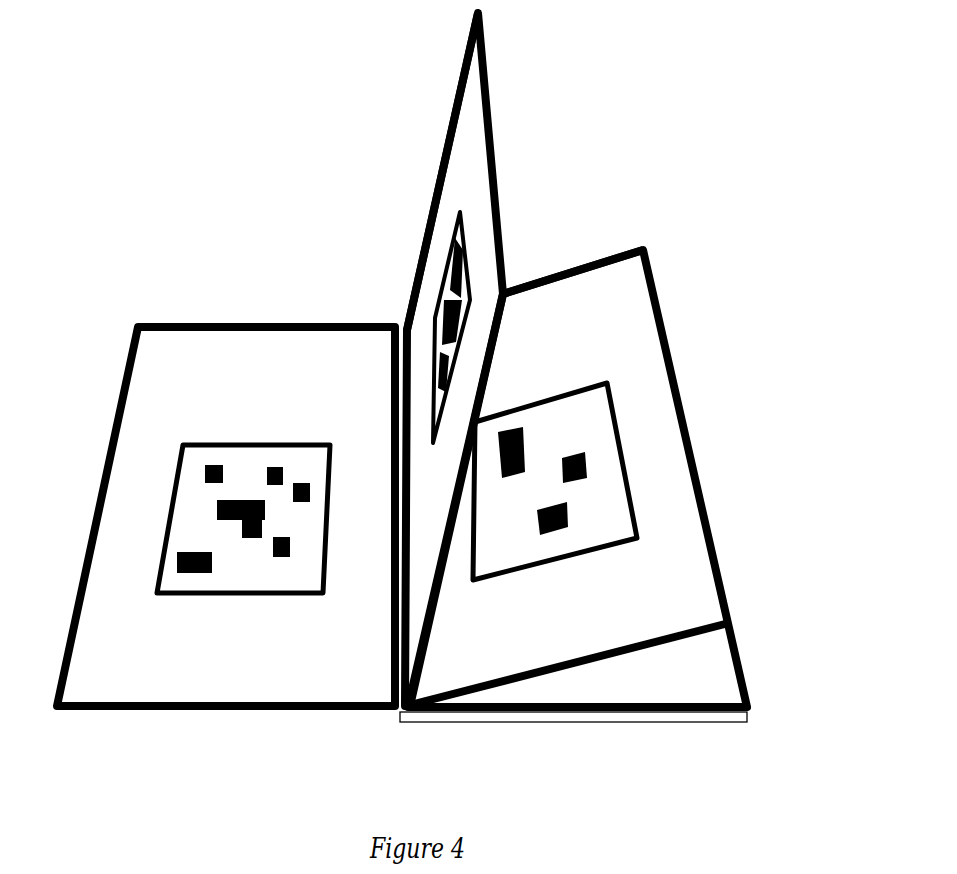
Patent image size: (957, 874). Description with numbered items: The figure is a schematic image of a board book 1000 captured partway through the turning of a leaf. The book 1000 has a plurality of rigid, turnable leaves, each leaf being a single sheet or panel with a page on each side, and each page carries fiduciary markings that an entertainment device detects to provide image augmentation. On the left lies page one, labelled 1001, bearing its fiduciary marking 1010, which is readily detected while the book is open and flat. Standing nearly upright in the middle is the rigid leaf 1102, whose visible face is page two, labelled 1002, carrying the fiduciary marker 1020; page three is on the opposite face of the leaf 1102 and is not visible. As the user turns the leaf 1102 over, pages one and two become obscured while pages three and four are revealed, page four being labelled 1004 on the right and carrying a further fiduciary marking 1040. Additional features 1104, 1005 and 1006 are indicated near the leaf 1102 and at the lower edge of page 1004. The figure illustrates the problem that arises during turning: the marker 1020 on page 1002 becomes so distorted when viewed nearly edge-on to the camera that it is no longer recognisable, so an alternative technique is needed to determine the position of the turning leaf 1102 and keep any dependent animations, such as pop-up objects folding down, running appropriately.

The book 1000 is at (432, 389).
The page 1 1001 is at (226, 516).
The page 2 1002 is at (495, 105).
The page 4 1004 is at (577, 478).
The flap 1005 is at (704, 647).
The base strip 1006 is at (704, 686).
The fiduciary marking 1010 is at (168, 482).
The fiduciary marker 1020 is at (435, 278).
The third marker 1040 is at (627, 447).
The rigid leaf 1102 is at (441, 117).
The second hinge edge 1104 is at (576, 248).